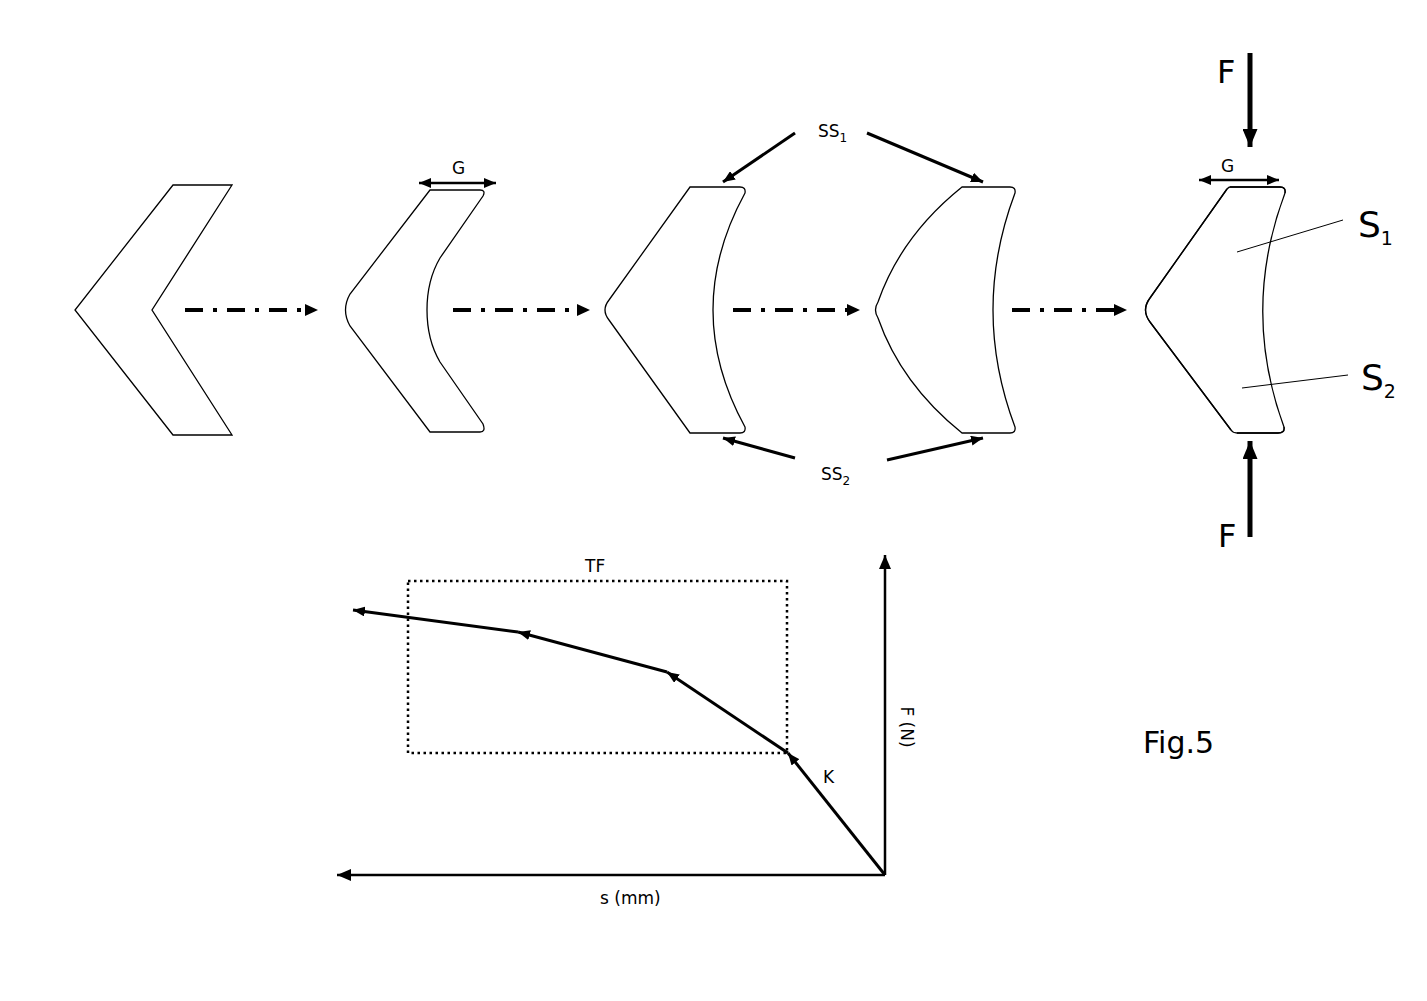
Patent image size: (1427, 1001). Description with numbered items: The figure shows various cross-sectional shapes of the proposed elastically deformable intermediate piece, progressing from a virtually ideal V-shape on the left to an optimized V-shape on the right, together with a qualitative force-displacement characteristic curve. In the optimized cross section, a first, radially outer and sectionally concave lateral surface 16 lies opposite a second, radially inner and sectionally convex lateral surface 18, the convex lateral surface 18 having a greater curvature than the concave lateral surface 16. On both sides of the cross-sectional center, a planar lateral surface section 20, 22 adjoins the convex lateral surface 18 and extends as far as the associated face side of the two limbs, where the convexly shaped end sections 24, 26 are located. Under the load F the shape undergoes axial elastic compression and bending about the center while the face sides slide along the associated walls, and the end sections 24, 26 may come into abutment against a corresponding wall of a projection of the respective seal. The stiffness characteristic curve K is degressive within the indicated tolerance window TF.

The concave lateral surface 16 is at (1272, 303).
The convex lateral surface 18 is at (1140, 287).
The planar lateral surface section 20 is at (1178, 233).
The planar lateral surface section 22 is at (1178, 375).
The end section 24 is at (1285, 188).
The end section 26 is at (1290, 432).